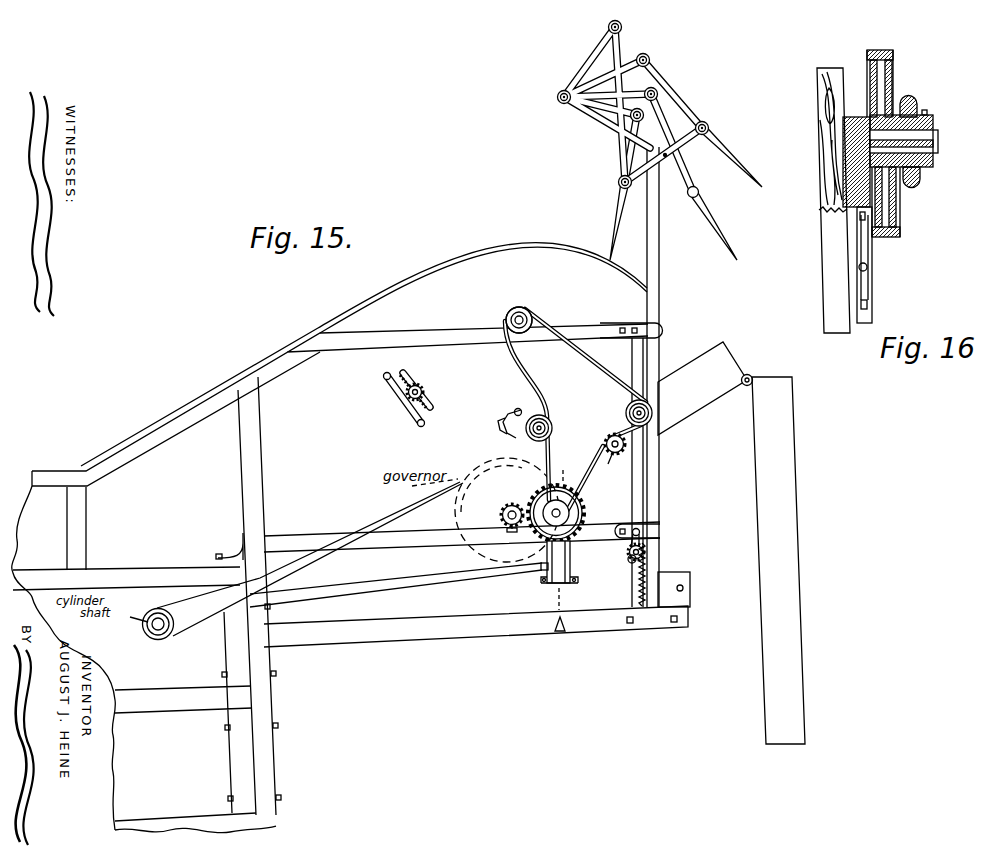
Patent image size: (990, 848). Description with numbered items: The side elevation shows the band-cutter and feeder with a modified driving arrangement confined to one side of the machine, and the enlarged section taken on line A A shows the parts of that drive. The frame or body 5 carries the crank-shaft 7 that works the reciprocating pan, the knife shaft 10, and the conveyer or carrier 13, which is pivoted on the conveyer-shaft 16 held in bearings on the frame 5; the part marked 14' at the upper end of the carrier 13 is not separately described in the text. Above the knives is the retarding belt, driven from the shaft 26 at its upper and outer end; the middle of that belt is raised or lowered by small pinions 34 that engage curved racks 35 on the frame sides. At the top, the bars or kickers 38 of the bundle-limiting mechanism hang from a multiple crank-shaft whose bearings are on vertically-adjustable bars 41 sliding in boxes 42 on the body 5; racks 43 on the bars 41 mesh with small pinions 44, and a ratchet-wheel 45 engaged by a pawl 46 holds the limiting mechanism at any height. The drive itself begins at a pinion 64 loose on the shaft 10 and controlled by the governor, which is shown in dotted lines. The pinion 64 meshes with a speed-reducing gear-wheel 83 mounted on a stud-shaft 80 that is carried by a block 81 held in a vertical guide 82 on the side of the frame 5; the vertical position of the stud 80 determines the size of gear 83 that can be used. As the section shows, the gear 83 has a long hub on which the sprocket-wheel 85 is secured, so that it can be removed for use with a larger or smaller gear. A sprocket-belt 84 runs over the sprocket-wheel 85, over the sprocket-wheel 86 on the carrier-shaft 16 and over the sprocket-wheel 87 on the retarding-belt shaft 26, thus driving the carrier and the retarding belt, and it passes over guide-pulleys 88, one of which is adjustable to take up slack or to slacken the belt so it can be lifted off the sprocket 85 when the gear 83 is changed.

In FIG. 15, the frame 5 is at (417, 343).
In FIG. 16, the frame 5 is at (817, 100).
In FIG. 15, the crank-shaft 7 is at (683, 588).
In FIG. 15, the knife shaft 10 is at (548, 509).
In FIG. 15, the conveyer or carrier 13 is at (785, 496).
In FIG. 15, the pivoted arm 14' is at (718, 388).
In FIG. 15, the conveyer-shaft 16 is at (616, 456).
In FIG. 15, the retarding-belt shaft 26 is at (533, 314).
In FIG. 15, the pinions 34 is at (424, 392).
In FIG. 15, the curved racks 35 is at (397, 394).
In FIG. 15, the straw rack arms 38 is at (735, 163).
In FIG. 15, the vertically-adjustable bars 41 is at (660, 283).
In FIG. 15, the bearings or boxes 42 is at (663, 328).
In FIG. 15, the racks 43 is at (641, 582).
In FIG. 15, the pinions 44 is at (633, 558).
In FIG. 15, the ratchet-wheel 45 is at (645, 546).
In FIG. 15, the pawl 46 is at (642, 533).
In FIG. 15, the pinion 64 is at (498, 514).
In FIG. 16, the stud-shaft 80 is at (918, 140).
In FIG. 16, the block 81 is at (860, 117).
In FIG. 15, the vertical guide 82 is at (548, 570).
In FIG. 16, the vertical guide 82 is at (868, 278).
In FIG. 15, the speed-reducing gear-wheel 83 is at (569, 527).
In FIG. 16, the speed-reducing gear-wheel 83 is at (893, 66).
In FIG. 15, the sprocket-belt 84 is at (513, 383).
In FIG. 15, the sprocket-wheel 85 is at (569, 513).
In FIG. 16, the sprocket-wheel 85 is at (915, 102).
In FIG. 15, the sprocket-wheel 86 is at (615, 436).
In FIG. 15, the sprocket-wheel 87 is at (518, 307).
In FIG. 15, the guide-pulleys 88 is at (551, 425).
In FIG. 15, the section line A is at (563, 466).